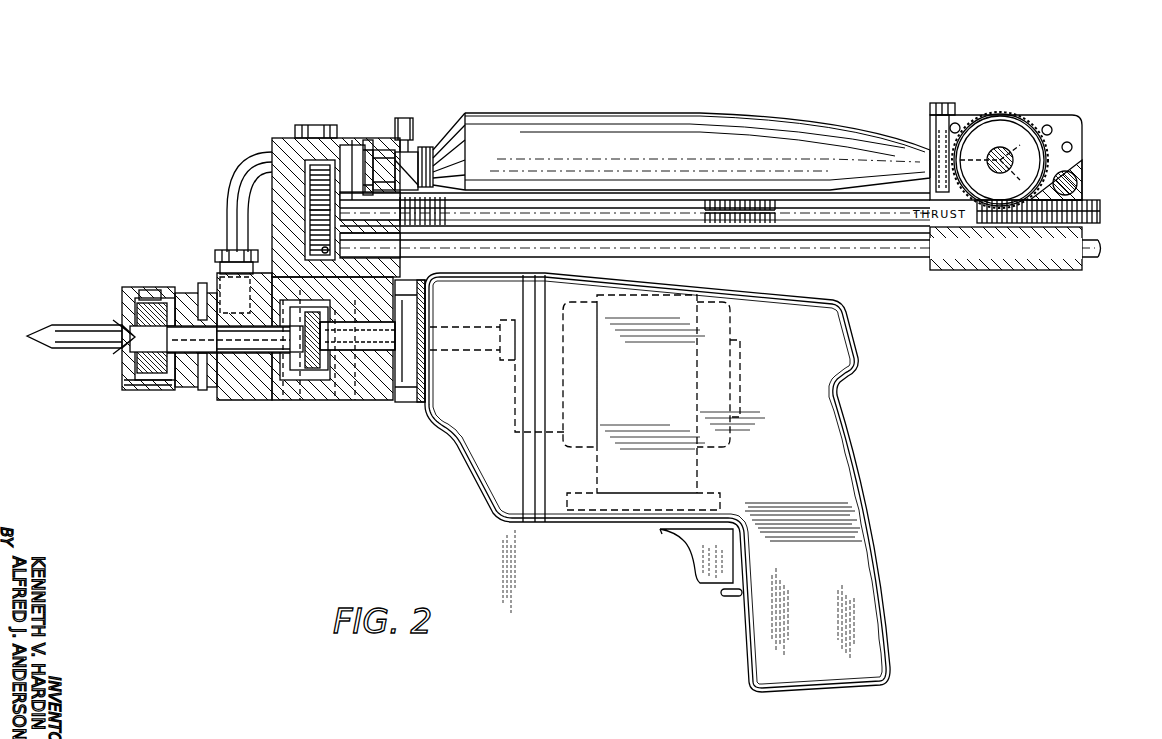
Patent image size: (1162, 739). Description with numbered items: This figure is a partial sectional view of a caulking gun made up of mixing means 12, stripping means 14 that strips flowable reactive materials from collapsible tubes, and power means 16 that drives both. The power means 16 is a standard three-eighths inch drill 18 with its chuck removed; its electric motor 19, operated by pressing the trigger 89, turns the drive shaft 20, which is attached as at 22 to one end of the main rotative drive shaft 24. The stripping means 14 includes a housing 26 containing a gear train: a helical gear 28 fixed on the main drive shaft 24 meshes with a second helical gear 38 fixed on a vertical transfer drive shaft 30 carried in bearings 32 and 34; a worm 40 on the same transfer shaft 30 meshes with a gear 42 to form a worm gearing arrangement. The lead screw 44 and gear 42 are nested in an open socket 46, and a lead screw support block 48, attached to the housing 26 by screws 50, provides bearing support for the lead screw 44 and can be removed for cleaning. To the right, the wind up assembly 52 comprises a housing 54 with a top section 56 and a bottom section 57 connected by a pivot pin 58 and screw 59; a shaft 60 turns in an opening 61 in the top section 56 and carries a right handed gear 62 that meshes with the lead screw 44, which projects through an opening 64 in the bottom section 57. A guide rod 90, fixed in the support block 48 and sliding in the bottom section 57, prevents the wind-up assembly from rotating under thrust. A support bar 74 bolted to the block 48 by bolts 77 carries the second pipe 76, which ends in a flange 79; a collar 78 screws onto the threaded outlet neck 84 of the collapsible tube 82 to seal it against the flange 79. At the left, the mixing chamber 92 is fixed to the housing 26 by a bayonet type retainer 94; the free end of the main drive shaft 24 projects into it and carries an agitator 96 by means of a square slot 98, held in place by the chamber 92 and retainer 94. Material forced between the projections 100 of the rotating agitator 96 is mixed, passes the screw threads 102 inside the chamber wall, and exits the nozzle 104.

The mixing means 12 is at (103, 246).
The stripping means 14 is at (783, 88).
The power means 16 is at (722, 673).
The drill 18 is at (843, 491).
The electric motor 19 is at (725, 398).
The drive shaft 20 is at (390, 402).
The attachment 22 is at (350, 401).
The main rotative drive shaft 24 is at (210, 352).
The housing 26 is at (235, 399).
The helical gear 28 is at (312, 401).
The transfer drive shaft 30 is at (298, 402).
The bearing 32 is at (282, 400).
The bearing 34 is at (315, 124).
The second helical gear 38 is at (300, 310).
The worm 40 is at (309, 198).
The gear 42 is at (309, 232).
The lead screw 44 is at (748, 198).
The open socket 46 is at (322, 252).
The lead screw support block 48 is at (352, 138).
The screws 50 is at (404, 225).
The wind up assembly 52 is at (958, 292).
The housing 54 is at (1070, 112).
The top section 56 is at (1083, 136).
The bottom section 57 is at (1068, 269).
The pivot pin 58 is at (1078, 181).
The screw 59 is at (942, 103).
The shaft 60 is at (1000, 150).
The opening 61 is at (998, 152).
The right handed gear 62 is at (1008, 117).
The opening 64 is at (1101, 213).
The support bar 74 is at (368, 138).
The second pipe 76 is at (226, 222).
The bolts 77 is at (381, 149).
The collar 78 is at (404, 117).
The flange 79 is at (418, 152).
The collapsible tube 82 is at (690, 120).
The outlet neck 84 is at (432, 160).
The trigger 89 is at (688, 562).
The guide rod 90 is at (830, 256).
The mixing chamber 92 is at (94, 349).
The bayonet type retainer 94 is at (182, 293).
The agitator 96 is at (128, 386).
The square slot 98 is at (128, 330).
The projections 100 is at (160, 378).
The screw threads 102 is at (150, 291).
The nozzle 104 is at (62, 324).